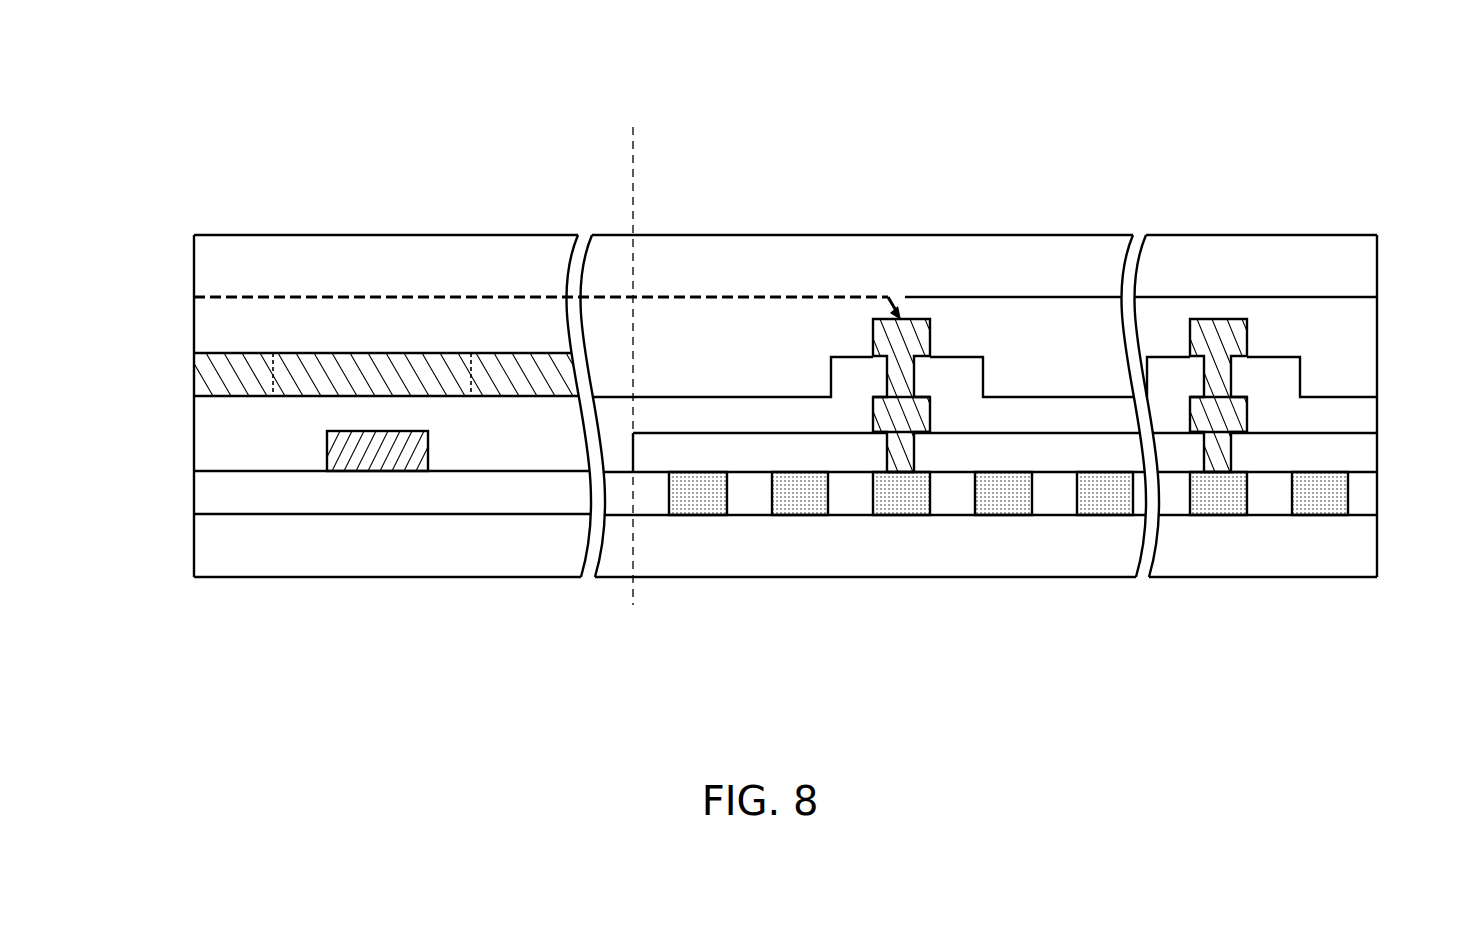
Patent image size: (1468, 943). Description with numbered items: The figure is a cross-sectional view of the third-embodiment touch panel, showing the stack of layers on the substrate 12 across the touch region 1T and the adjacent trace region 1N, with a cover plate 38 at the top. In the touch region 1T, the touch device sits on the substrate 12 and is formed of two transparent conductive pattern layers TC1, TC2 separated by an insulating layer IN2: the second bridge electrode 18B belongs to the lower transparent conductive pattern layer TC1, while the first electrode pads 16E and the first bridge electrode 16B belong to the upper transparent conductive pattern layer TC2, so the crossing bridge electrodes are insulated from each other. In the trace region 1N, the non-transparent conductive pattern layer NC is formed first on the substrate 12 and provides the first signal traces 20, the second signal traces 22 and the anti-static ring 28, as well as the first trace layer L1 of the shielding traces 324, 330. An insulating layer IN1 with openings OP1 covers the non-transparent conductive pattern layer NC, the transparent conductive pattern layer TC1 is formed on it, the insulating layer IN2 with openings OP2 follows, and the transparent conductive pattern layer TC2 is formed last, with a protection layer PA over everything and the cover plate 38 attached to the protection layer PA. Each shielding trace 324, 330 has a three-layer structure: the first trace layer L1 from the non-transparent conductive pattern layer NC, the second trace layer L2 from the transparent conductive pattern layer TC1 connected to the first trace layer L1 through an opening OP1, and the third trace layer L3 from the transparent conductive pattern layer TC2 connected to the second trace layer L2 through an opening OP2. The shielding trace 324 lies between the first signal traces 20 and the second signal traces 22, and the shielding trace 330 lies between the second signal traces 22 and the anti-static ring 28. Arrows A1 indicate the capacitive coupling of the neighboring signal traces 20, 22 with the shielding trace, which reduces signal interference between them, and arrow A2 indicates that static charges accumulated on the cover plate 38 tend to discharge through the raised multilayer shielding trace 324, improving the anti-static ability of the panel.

The substrate 12 is at (382, 562).
The cover plate 38 is at (382, 282).
The first bridge electrode 16B is at (333, 375).
The first electrode pad 16E is at (222, 377).
The second bridge electrode 18B is at (352, 453).
The first signal trace 20 is at (696, 497).
The second signal trace 22 is at (940, 425).
The anti-static ring 28 is at (1320, 497).
The shielding trace 324 is at (1018, 632).
The shielding trace 330 is at (1200, 632).
The first trace layer L1 is at (898, 497).
The second trace layer L2 is at (915, 432).
The third trace layer L3 is at (901, 378).
The opening OP1 is at (876, 447).
The opening OP2 is at (925, 381).
The arrow A1 is at (863, 406).
The arrow A2 is at (683, 297).
The transparent conductive pattern layer TC1 is at (1258, 415).
The transparent conductive pattern layer TC2 is at (1258, 342).
The protection layer PA is at (1348, 341).
The insulating layer IN1 is at (1348, 451).
The insulating layer IN2 is at (1348, 414).
The non-transparent conductive pattern layer NC is at (1352, 490).
The touch region 1T is at (628, 155).
The trace region 1N is at (1372, 155).